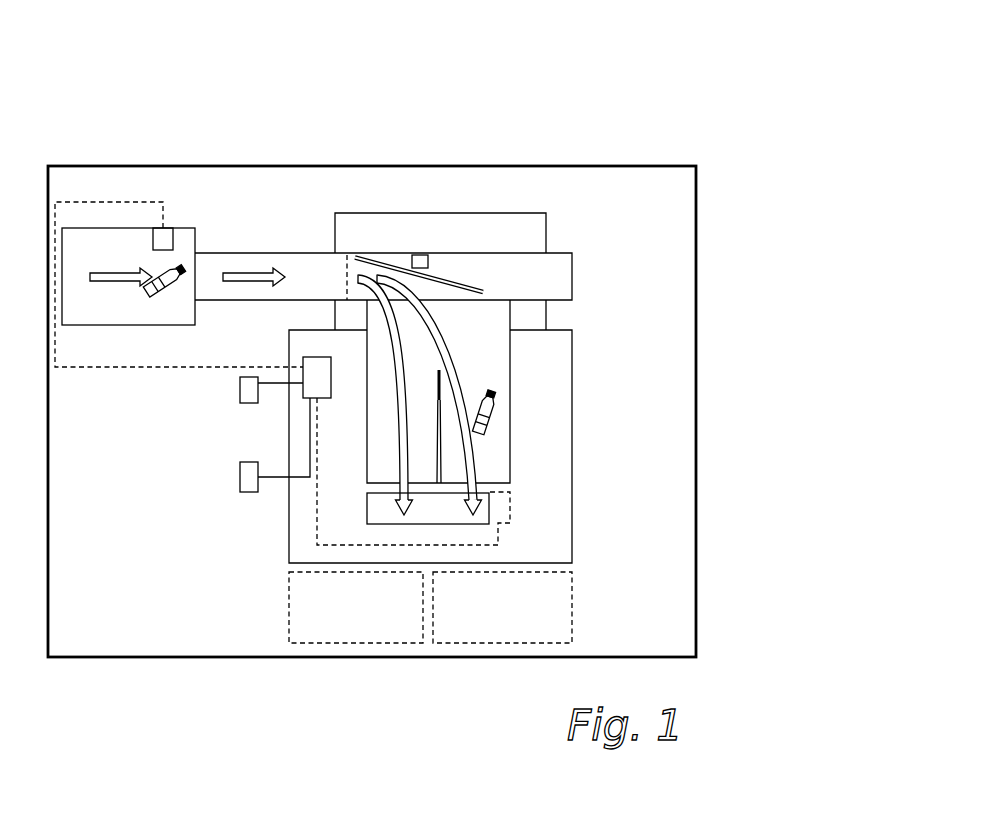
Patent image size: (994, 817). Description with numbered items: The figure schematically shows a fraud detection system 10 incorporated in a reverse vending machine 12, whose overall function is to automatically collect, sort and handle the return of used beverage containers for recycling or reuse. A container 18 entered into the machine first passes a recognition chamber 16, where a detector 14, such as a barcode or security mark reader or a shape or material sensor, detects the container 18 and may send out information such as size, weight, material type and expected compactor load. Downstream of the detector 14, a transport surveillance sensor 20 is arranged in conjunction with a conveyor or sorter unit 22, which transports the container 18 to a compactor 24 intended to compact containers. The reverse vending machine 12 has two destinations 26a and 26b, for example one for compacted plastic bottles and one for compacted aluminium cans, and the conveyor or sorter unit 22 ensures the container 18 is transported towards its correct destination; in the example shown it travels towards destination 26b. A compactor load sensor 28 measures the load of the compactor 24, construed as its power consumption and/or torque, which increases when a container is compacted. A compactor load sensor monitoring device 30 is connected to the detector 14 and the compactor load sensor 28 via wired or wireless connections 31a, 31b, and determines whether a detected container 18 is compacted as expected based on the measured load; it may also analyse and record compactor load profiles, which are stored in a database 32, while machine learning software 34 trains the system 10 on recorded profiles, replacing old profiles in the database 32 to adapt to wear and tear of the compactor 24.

The fraud detection system 10 is at (377, 331).
The reverse vending machine 12 is at (372, 411).
The detector 14 is at (168, 240).
The recognition chamber 16 is at (177, 260).
The container 18 is at (163, 293).
The transport surveillance sensor 20 is at (420, 267).
The conveyor or sorter unit 22 is at (372, 272).
The compactor 24 is at (448, 513).
The destination 26a is at (356, 607).
The destination 26b is at (502, 607).
The compactor load sensor 28 is at (502, 503).
The compactor load sensor monitoring device 30 is at (308, 388).
The connection 31a is at (95, 368).
The connection 31b is at (317, 517).
The database 32 is at (240, 387).
The machine learning software 34 is at (240, 474).